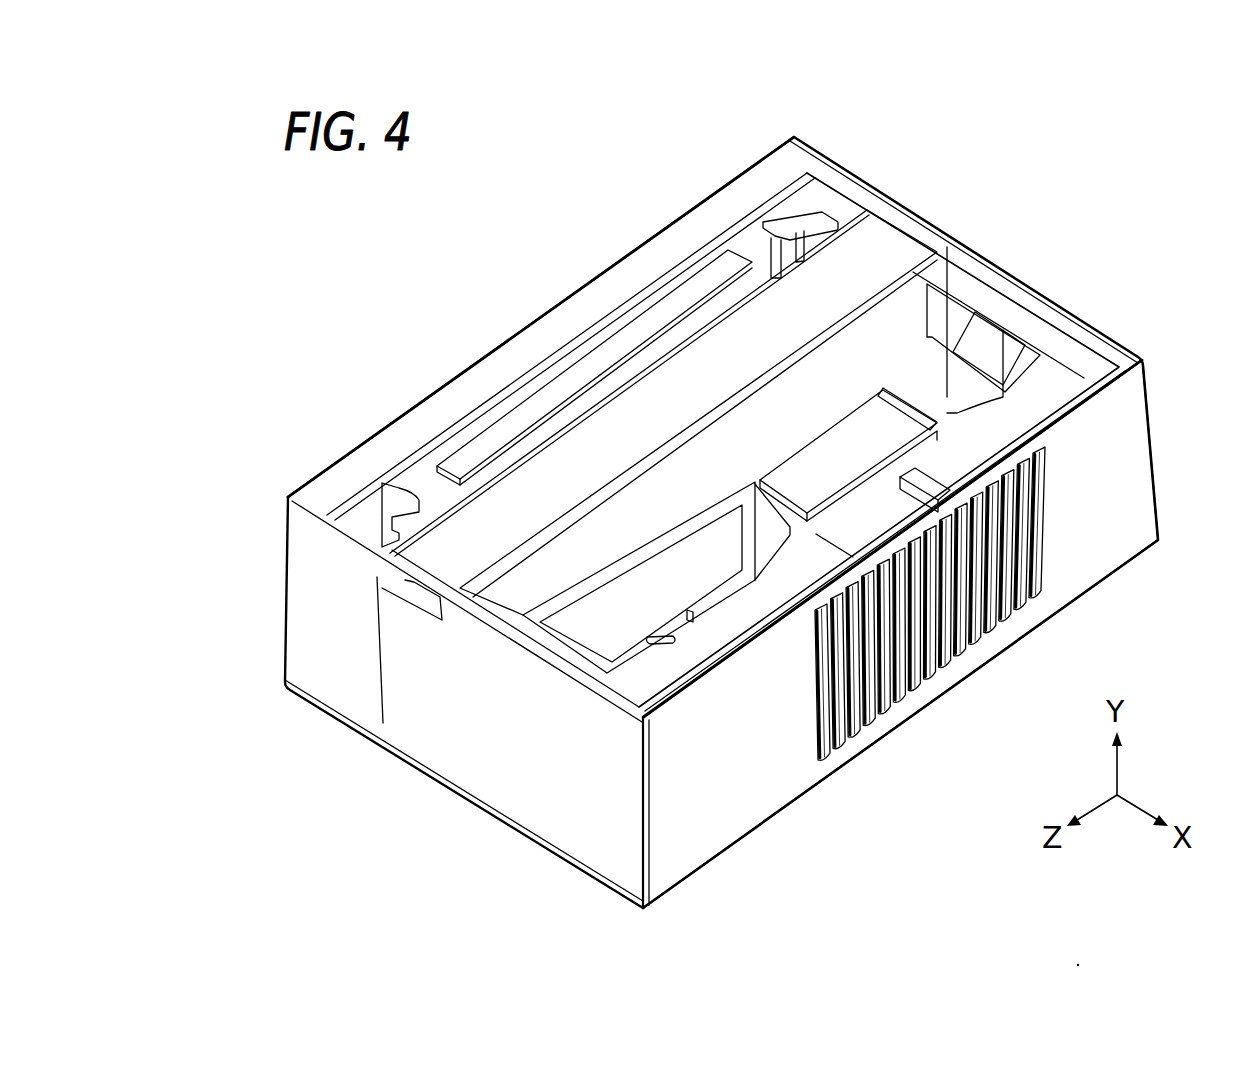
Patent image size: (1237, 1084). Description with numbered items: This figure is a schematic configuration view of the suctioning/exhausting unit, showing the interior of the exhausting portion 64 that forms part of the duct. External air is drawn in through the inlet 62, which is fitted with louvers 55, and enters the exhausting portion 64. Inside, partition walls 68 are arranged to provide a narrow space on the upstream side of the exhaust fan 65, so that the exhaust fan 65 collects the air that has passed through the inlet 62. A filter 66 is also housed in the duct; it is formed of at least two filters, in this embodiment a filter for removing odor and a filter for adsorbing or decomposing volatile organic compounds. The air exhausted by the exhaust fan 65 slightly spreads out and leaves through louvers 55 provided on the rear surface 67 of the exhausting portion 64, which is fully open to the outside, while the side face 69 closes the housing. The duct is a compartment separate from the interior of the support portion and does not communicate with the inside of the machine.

The louvers 55 is at (960, 632).
The inlet 62 is at (1040, 555).
The exhausting portion 64 is at (1009, 266).
The exhaust fan 65 is at (840, 445).
The filter 66 is at (878, 247).
The rear surface 67 is at (538, 318).
The partition walls 68 is at (905, 372).
The side face 69 is at (773, 793).